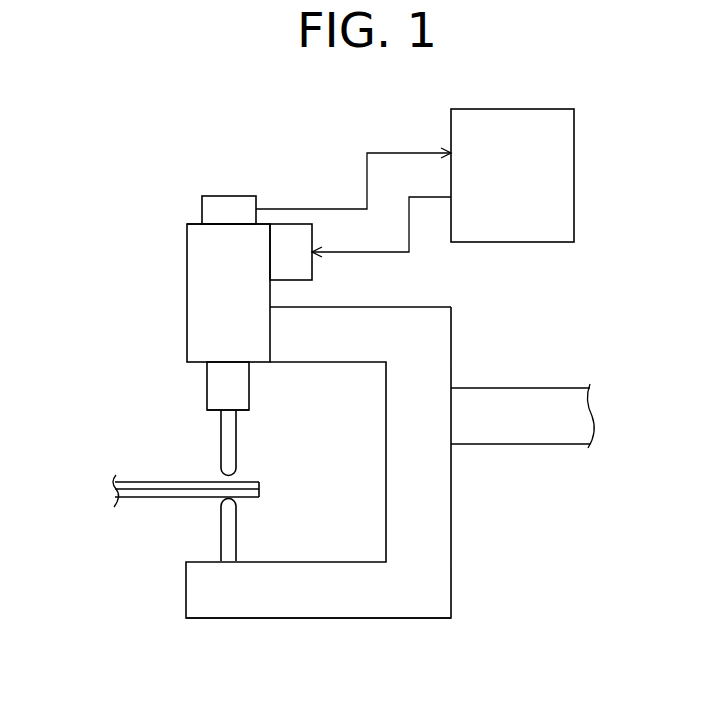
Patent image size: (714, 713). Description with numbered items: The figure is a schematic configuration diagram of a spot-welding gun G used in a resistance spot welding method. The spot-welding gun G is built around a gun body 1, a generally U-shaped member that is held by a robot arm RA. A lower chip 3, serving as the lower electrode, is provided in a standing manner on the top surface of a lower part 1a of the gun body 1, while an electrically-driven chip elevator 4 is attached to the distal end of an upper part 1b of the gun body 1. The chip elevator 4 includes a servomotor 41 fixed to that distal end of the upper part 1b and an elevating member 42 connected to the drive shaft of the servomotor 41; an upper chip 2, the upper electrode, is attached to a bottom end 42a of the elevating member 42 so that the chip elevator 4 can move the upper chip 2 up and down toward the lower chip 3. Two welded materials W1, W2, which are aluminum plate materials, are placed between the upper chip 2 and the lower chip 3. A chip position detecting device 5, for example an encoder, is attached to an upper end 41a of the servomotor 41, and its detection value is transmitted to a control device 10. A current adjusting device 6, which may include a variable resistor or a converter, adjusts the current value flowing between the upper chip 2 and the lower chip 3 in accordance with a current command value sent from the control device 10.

The gun body 1 is at (453, 571).
The lower part of the gun body 1a is at (254, 618).
The upper part of the gun body 1b is at (300, 307).
The upper chip 2 is at (232, 447).
The lower chip 3 is at (228, 522).
The chip elevator 4 is at (190, 295).
The servomotor 41 is at (186, 244).
The upper end of the servomotor 41a is at (196, 222).
The elevating member 42 is at (206, 381).
The bottom end of the elevating member 42a is at (213, 411).
The chip position detecting device 5 is at (234, 203).
The current adjusting device 6 is at (305, 241).
The control device 10 is at (575, 170).
The welded material W1 is at (260, 486).
The welded material W2 is at (260, 492).
The robot arm RA is at (553, 388).
The spot-welding gun G is at (126, 391).